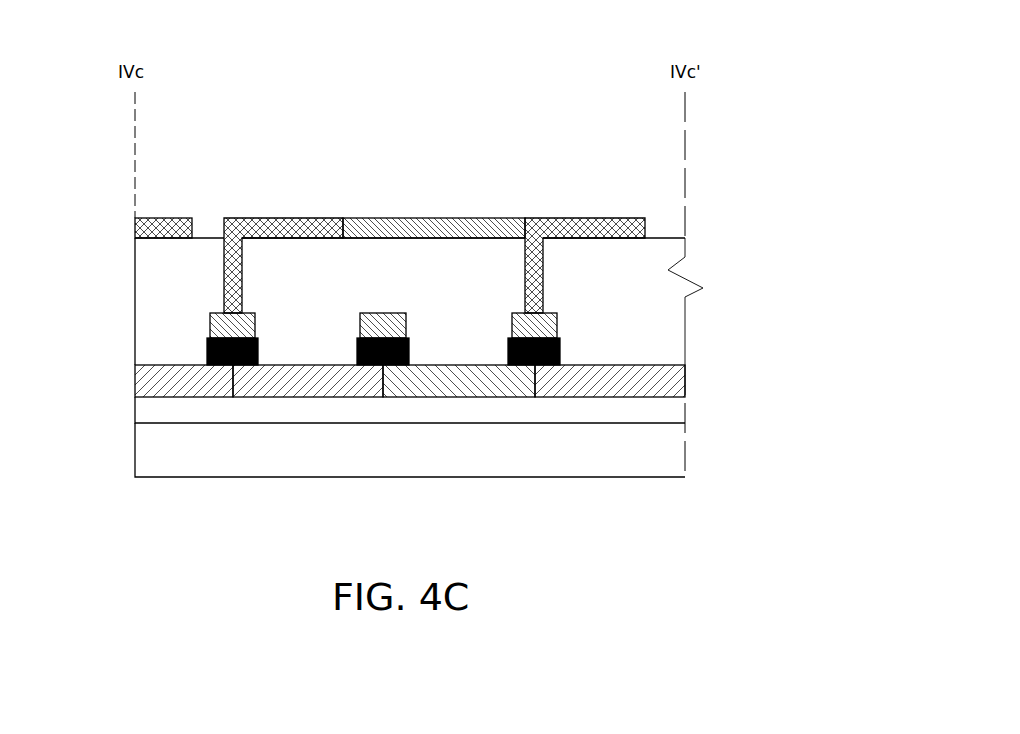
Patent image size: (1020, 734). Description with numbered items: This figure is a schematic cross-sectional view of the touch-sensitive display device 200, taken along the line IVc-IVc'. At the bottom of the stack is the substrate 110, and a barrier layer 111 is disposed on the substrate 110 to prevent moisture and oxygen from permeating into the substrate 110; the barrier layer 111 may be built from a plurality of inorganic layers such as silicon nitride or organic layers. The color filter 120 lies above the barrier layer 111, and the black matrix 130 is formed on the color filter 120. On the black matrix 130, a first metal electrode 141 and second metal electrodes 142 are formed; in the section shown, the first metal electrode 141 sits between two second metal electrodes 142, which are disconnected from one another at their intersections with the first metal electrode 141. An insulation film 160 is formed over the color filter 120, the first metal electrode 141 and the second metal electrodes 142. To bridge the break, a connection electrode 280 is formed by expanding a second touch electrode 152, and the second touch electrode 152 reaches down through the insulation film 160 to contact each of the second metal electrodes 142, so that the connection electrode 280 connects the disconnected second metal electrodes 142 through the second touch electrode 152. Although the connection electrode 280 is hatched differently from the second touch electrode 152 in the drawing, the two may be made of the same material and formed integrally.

The touch-sensitive display device 200 is at (656, 23).
The substrate 110 is at (140, 447).
The barrier layer 111 is at (140, 413).
The color filter 120 is at (455, 380).
The black matrix 130 is at (207, 341).
The first metal electrode 141 is at (380, 328).
The second metal electrode 142 is at (220, 326).
The second touch electrode 152 is at (305, 227).
The insulation film 160 is at (140, 263).
The connection electrode 280 is at (482, 227).